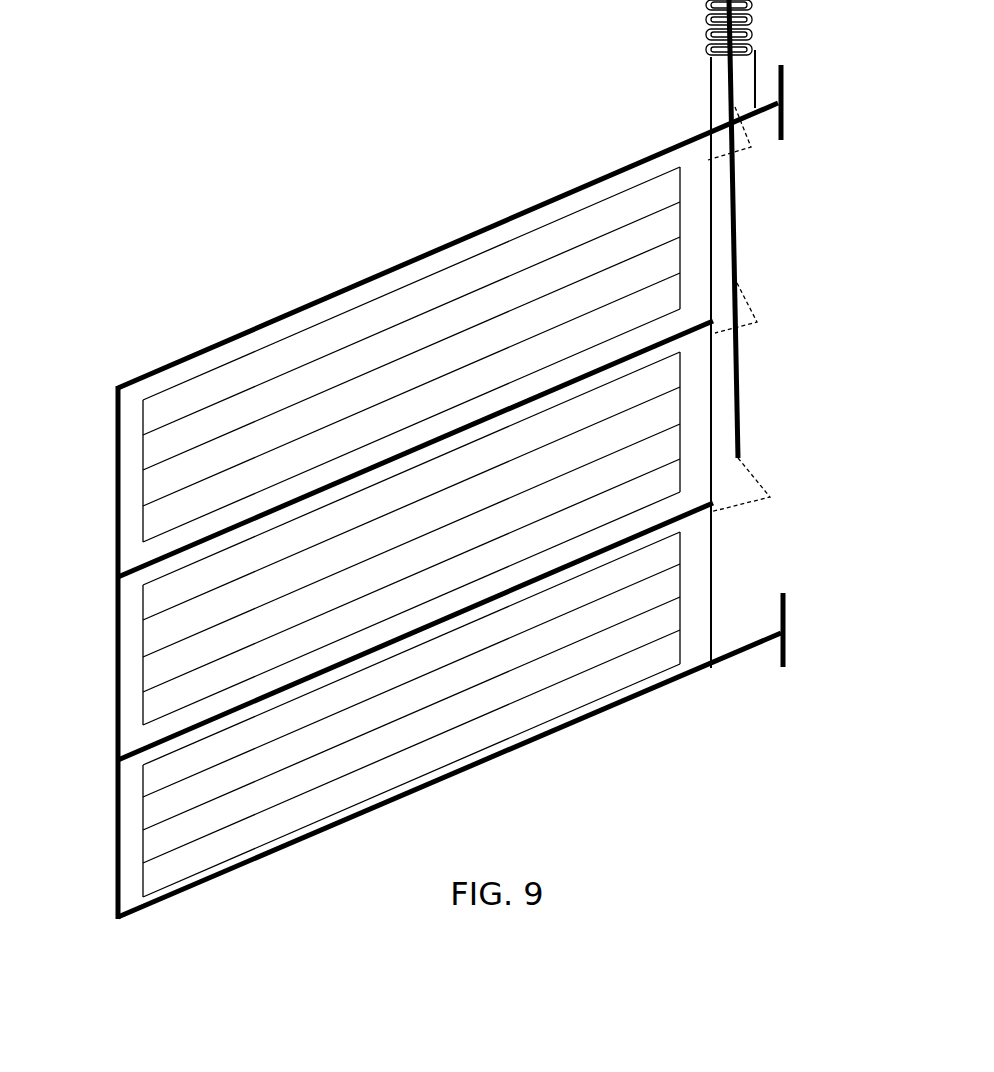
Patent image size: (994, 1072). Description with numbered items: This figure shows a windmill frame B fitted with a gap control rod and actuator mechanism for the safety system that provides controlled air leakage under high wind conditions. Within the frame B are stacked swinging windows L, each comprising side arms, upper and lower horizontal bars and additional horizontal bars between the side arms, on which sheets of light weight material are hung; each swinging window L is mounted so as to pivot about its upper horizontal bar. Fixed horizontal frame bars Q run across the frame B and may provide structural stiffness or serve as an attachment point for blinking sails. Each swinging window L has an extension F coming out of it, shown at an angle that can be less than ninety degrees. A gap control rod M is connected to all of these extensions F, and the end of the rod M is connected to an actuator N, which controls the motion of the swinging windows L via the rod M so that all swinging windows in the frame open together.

The actuator which controls the gap N is at (762, 6).
The gap control rod M is at (748, 223).
The swinging windows extension F is at (766, 465).
The frame of windmill B is at (706, 672).
The swinging window L is at (298, 778).
The horizontal frame bar Q is at (118, 588).